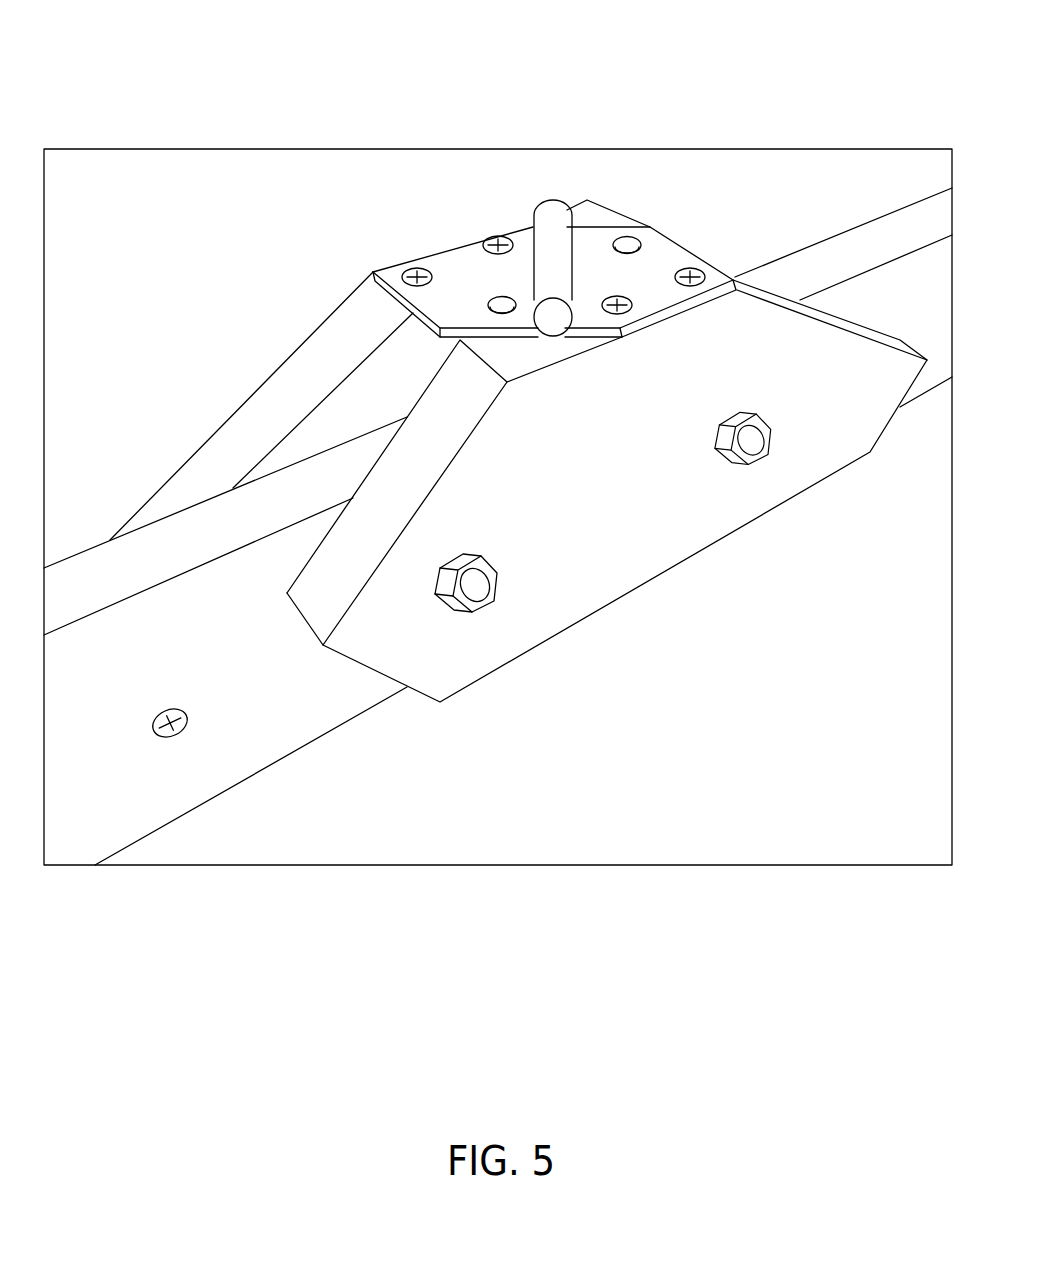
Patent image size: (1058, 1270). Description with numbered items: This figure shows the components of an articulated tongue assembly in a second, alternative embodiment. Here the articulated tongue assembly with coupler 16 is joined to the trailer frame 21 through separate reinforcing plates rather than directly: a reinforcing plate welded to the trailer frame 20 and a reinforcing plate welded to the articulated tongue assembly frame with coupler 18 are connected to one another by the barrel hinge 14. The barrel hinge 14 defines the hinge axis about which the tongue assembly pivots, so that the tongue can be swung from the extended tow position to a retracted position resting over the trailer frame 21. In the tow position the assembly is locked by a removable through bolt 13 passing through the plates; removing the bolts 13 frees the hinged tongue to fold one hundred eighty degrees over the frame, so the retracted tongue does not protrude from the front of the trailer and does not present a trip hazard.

The removable through bolt 13 is at (748, 444).
The barrel hinge 14 is at (547, 240).
The articulated tongue assembly with coupler 16 is at (900, 290).
The reinforcing plate welded to articulated tongue assembly frame with coupler 18 is at (737, 342).
The reinforcing plate welded to trailer frame 20 is at (283, 393).
The trailer frame 21 is at (82, 570).